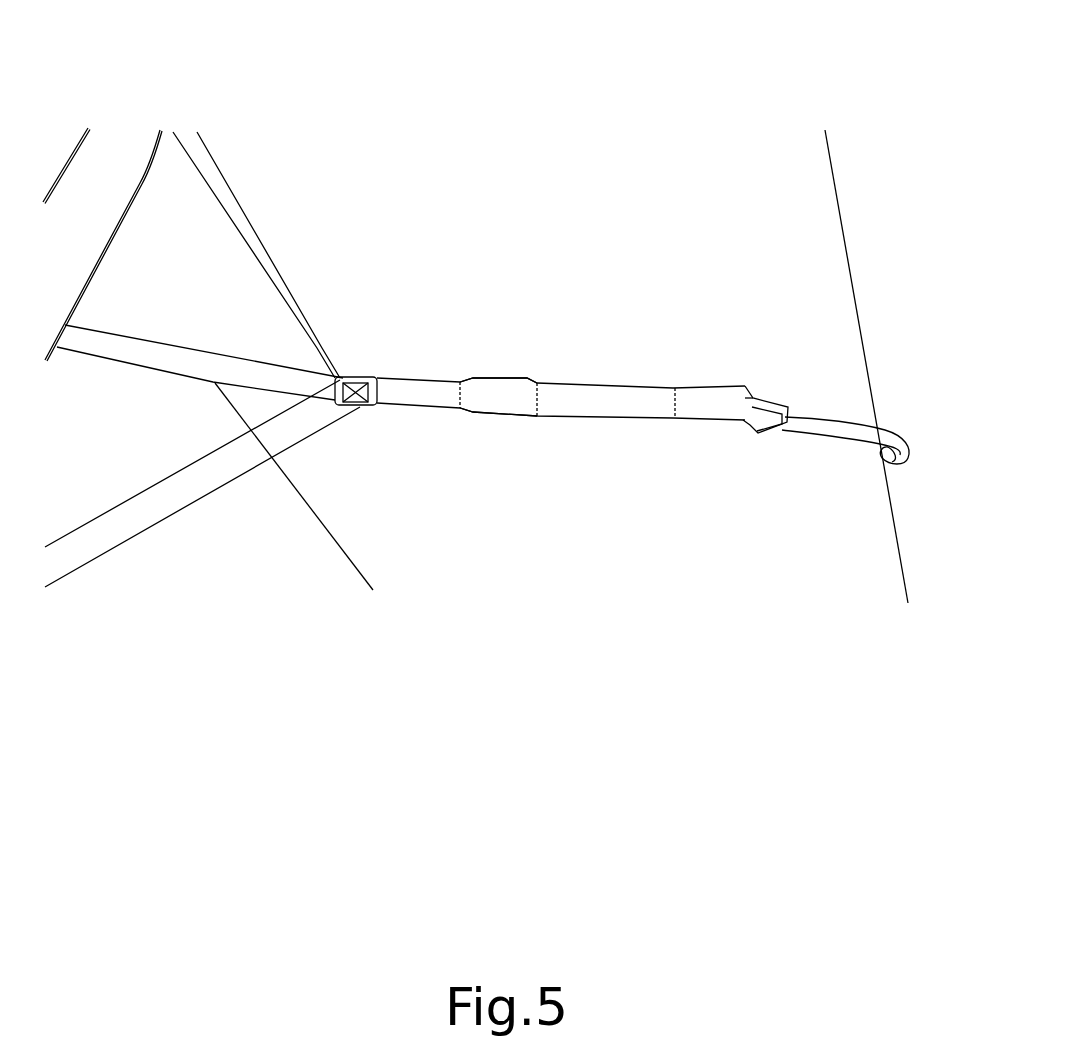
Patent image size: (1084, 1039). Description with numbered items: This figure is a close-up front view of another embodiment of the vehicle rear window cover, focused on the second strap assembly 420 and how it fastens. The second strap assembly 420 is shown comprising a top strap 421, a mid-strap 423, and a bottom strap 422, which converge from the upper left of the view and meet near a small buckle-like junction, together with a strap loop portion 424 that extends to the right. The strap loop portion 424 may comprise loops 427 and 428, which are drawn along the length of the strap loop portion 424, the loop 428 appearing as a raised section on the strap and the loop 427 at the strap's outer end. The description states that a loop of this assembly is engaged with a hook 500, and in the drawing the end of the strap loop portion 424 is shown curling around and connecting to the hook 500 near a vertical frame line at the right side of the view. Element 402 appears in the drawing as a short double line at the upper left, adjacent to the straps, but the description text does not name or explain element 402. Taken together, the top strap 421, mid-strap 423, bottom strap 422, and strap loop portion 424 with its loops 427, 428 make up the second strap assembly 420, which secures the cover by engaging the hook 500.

The pole 402 is at (103, 148).
The second strap assembly 420 is at (487, 188).
The top strap 421 is at (232, 192).
The bottom strap 422 is at (150, 523).
The mid-strap 423 is at (373, 590).
The strap loop portion 424 is at (598, 323).
The loop 427 is at (727, 430).
The loop 428 is at (508, 423).
The hook 500 is at (847, 422).